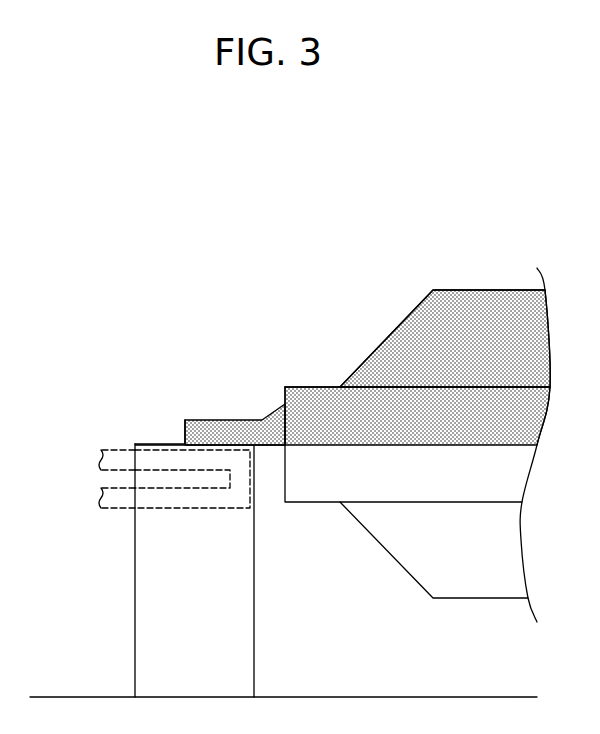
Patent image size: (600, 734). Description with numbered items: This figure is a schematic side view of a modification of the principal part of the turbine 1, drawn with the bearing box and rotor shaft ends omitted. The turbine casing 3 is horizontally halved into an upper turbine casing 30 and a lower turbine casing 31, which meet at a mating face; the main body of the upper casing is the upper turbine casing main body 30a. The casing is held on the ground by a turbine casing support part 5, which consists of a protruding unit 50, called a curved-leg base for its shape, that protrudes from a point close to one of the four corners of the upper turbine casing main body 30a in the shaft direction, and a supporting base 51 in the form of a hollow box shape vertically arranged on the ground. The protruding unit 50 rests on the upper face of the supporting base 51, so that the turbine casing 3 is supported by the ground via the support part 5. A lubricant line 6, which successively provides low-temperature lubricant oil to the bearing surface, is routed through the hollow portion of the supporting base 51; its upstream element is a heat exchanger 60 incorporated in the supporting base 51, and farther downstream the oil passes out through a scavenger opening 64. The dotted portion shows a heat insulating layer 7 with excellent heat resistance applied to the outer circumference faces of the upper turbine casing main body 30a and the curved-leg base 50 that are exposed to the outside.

The turbine 1 is at (298, 245).
The turbine casing 3 is at (458, 288).
The heat insulating layer 7 is at (508, 300).
The upper turbine casing 30 is at (378, 348).
The upper turbine casing main body 30a is at (311, 387).
The lower turbine casing 31 is at (377, 540).
The turbine casing support part 5 is at (233, 360).
The protruding unit (curved-leg base) 50 is at (210, 418).
The supporting base 51 is at (163, 443).
The lubricant line 6 is at (118, 513).
The heat exchanger 60 is at (185, 508).
The scavenger opening 64 is at (117, 479).